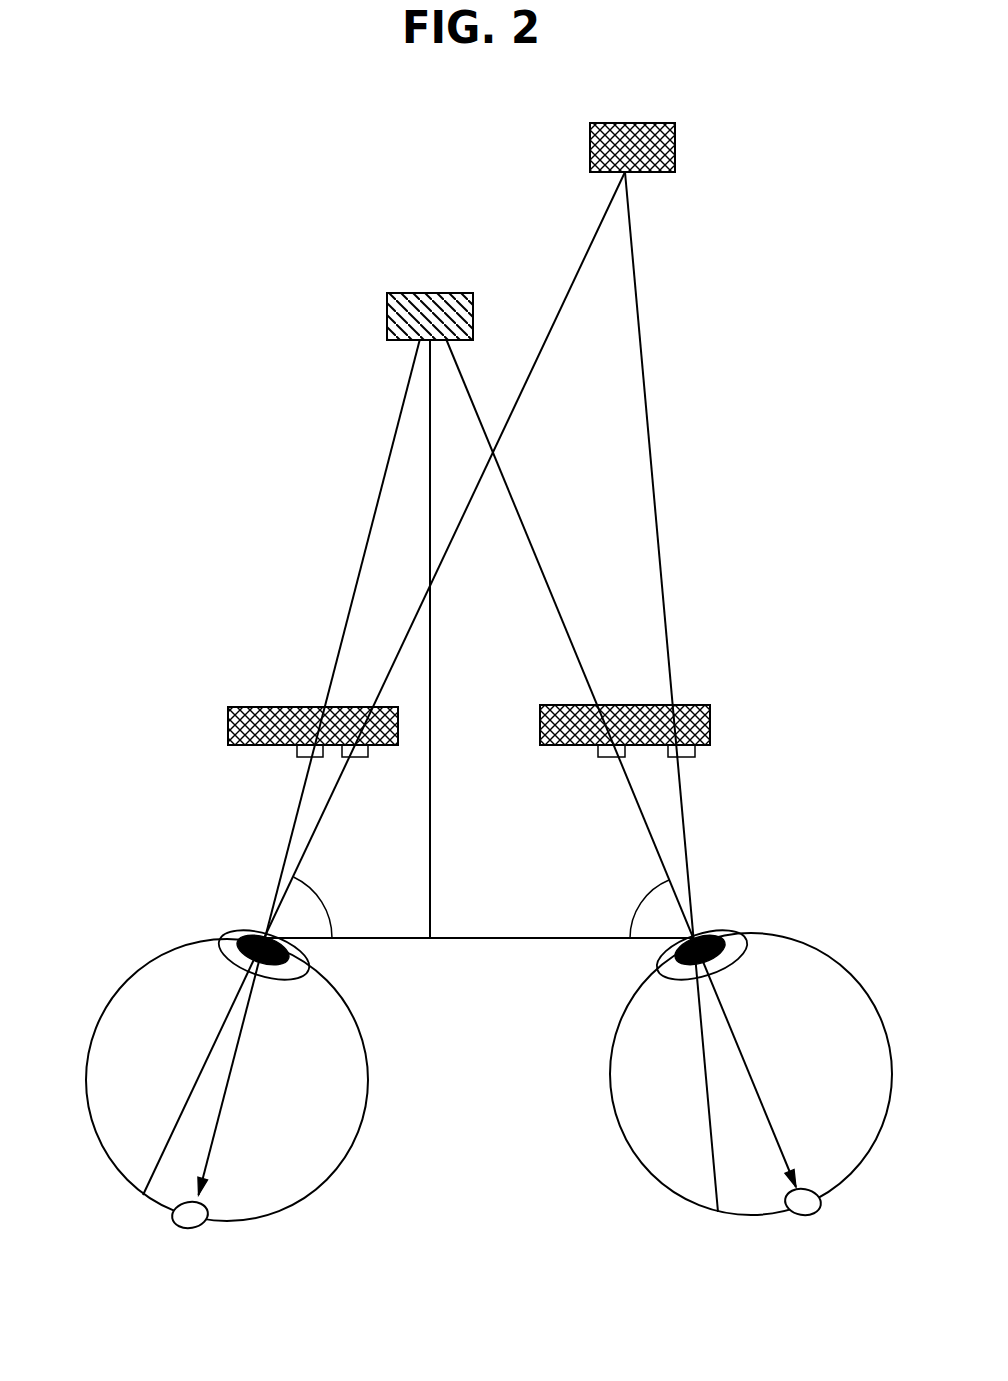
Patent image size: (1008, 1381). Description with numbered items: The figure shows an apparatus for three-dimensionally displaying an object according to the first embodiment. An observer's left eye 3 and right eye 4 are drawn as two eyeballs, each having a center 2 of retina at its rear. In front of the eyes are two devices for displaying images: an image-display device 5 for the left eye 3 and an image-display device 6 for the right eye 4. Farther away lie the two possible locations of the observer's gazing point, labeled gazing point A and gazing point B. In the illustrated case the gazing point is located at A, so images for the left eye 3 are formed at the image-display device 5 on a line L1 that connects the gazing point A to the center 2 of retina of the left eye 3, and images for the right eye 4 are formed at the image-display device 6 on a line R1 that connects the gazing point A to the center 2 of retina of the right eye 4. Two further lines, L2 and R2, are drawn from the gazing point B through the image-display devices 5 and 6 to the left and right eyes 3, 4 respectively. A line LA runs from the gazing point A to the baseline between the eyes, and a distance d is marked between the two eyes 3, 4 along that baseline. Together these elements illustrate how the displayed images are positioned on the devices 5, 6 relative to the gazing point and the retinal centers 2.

The center of retina 2 is at (173, 1217).
The left eye 3 is at (122, 1177).
The right eye 4 is at (867, 1153).
The image-display device 5 is at (228, 715).
The image-display device 6 is at (710, 730).
The gazing point A is at (430, 299).
The gazing point B is at (632, 129).
The line L1 is at (290, 815).
The left eye light ray from object B L2 is at (330, 805).
The line R1 is at (628, 780).
The right eye light ray from object B R2 is at (687, 807).
The distance to object A LA is at (455, 639).
The interpupillary distance d is at (479, 961).